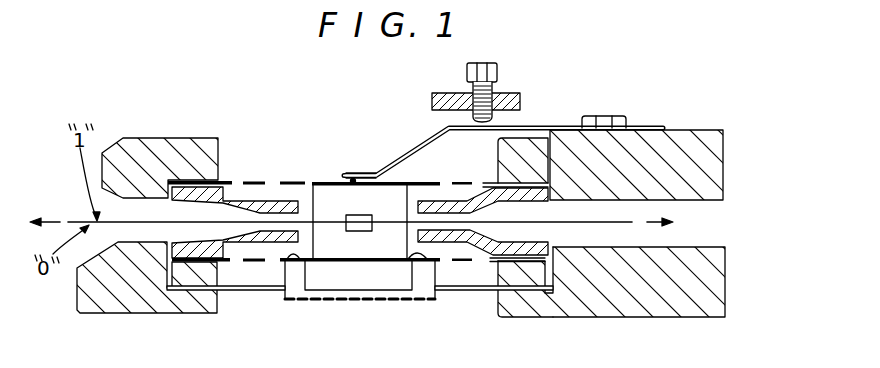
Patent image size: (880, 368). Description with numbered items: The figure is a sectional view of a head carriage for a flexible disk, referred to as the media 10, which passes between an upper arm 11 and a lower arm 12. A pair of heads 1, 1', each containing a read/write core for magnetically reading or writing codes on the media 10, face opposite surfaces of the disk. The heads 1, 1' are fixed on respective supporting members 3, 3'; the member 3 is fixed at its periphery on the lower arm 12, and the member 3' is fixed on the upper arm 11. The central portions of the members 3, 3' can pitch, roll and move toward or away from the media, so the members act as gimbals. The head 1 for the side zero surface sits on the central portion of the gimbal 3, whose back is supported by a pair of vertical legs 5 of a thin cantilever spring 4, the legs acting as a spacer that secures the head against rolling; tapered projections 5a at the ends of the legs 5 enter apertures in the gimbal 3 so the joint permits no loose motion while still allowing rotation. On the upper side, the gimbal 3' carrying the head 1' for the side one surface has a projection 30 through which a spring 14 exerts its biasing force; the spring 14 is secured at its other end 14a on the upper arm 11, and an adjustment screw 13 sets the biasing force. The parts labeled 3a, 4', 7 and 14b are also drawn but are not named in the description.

The head 1 is at (360, 264).
The head 1' is at (362, 153).
The supporting member 3 is at (346, 266).
The supporting member 3' is at (358, 161).
The downstream flow passage member 3a is at (518, 185).
The cantilever spring 4 is at (360, 303).
The support rod 4' is at (494, 315).
The vertical legs 5 is at (428, 276).
The projections 5a is at (285, 262).
The holder block 7 is at (197, 277).
The media 10 is at (82, 219).
The upper arm 11 is at (687, 147).
The lower arm 12 is at (673, 306).
The adjustment screw 13 is at (484, 87).
The spring 14 is at (418, 147).
The other end of spring 14a is at (566, 128).
The contact foot of bracket 14b is at (358, 172).
The projection 30 is at (345, 173).